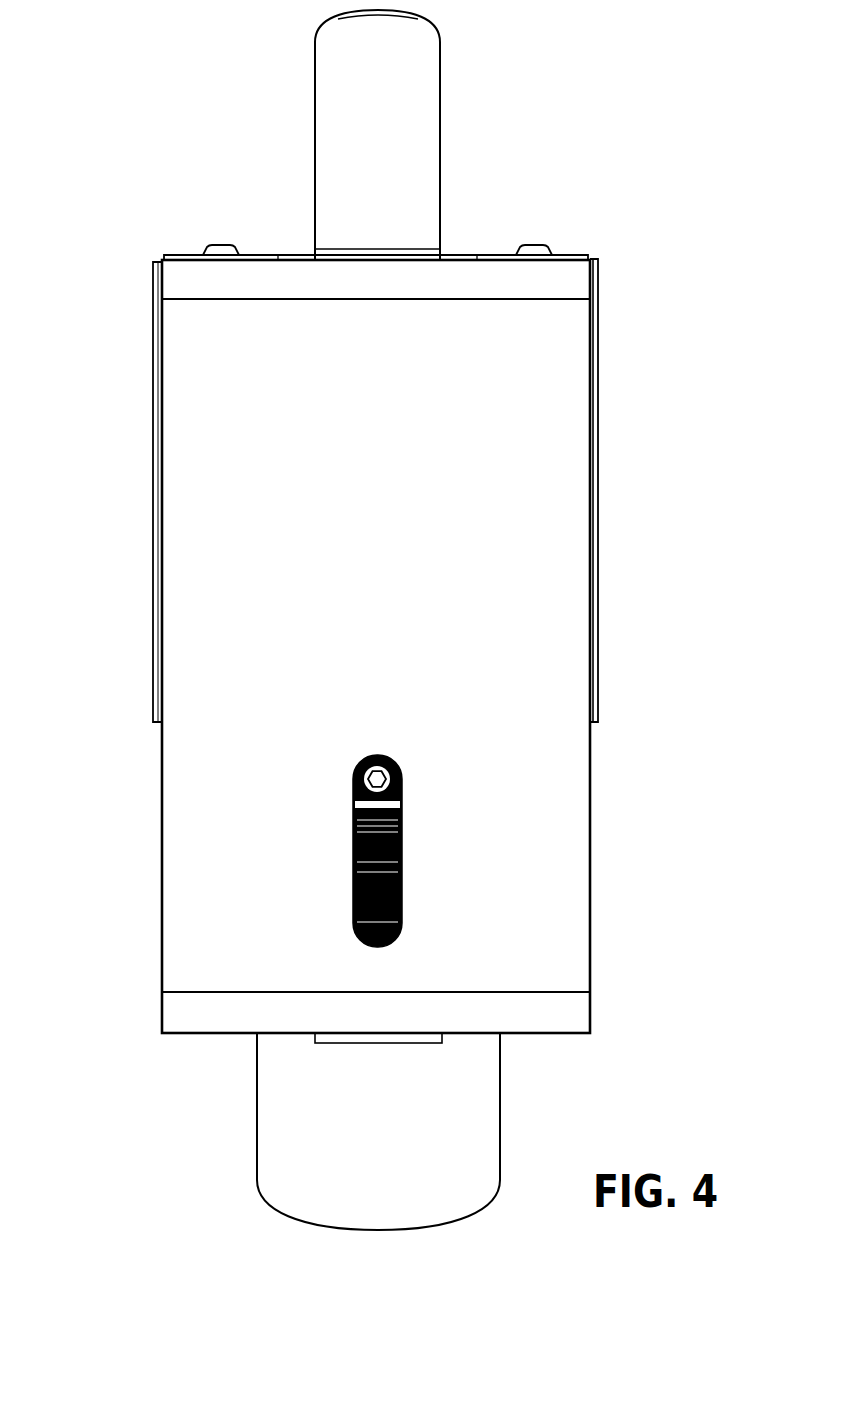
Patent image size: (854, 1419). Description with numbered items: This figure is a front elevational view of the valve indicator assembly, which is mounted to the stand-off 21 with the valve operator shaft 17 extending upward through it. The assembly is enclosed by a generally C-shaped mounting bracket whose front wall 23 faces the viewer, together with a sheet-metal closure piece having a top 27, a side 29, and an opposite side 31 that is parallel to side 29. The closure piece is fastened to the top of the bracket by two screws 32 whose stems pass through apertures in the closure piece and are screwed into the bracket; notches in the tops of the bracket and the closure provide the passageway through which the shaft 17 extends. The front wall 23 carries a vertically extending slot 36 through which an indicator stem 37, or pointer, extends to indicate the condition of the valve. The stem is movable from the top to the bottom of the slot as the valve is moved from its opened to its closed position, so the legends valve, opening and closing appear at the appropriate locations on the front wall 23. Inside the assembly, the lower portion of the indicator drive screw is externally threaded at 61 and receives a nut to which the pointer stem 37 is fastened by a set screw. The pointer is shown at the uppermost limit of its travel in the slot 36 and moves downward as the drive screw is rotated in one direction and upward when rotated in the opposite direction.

The shaft 17 is at (418, 72).
The stand-off 21 is at (348, 1078).
The front wall 23 is at (383, 580).
The top 27 is at (262, 254).
The side 29 is at (157, 422).
The opposite side 31 is at (598, 437).
The screws 32 is at (217, 245).
The slot 36 is at (393, 802).
The indicator stem 37 is at (393, 755).
The externally threaded portion 61 is at (403, 863).